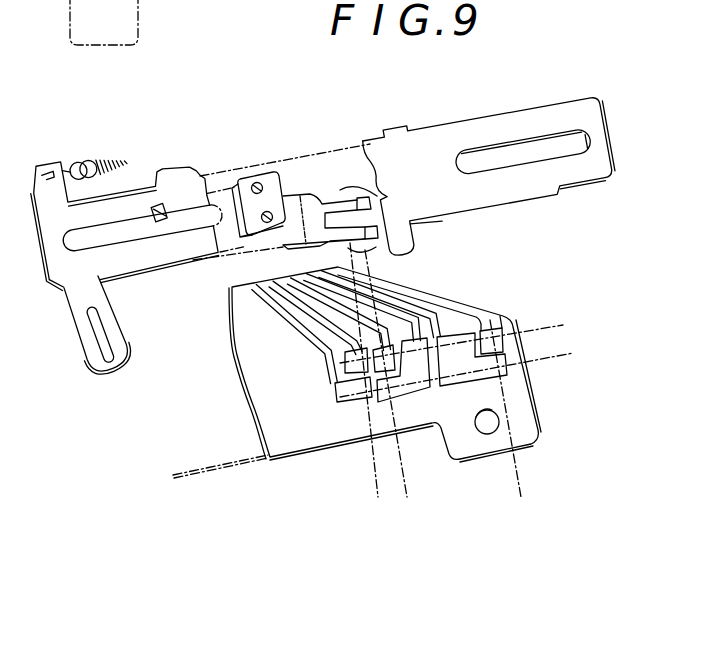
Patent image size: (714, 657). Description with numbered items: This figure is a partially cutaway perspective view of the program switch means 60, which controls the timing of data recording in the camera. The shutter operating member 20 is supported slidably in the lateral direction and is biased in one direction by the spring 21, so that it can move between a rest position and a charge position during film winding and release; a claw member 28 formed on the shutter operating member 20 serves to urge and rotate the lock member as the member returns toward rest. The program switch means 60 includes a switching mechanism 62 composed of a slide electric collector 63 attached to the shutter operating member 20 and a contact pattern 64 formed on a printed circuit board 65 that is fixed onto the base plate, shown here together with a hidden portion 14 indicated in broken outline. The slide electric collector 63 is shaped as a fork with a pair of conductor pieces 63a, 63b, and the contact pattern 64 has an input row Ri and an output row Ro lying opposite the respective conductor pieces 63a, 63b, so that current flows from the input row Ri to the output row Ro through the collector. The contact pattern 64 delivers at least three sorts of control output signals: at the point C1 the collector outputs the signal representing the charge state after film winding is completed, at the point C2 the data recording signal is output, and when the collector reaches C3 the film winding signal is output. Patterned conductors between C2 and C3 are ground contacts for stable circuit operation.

The housing 14 is at (176, 0).
The shutter operating member 20 is at (477, 129).
The spring 21 is at (86, 164).
The claw member 28 is at (156, 218).
The program switch means 60 is at (293, 190).
The switching mechanism 62 is at (432, 294).
The slide electric collector 63 is at (425, 235).
The conductor piece 63a is at (380, 240).
The conductor piece 63b is at (372, 203).
The contact pattern 64 is at (447, 322).
The printed circuit board 65 is at (302, 425).
The output row Ro is at (563, 325).
The input row Ri is at (573, 353).
The contact point C1 is at (377, 481).
The contact point C2 is at (405, 481).
The contact point C3 is at (516, 466).